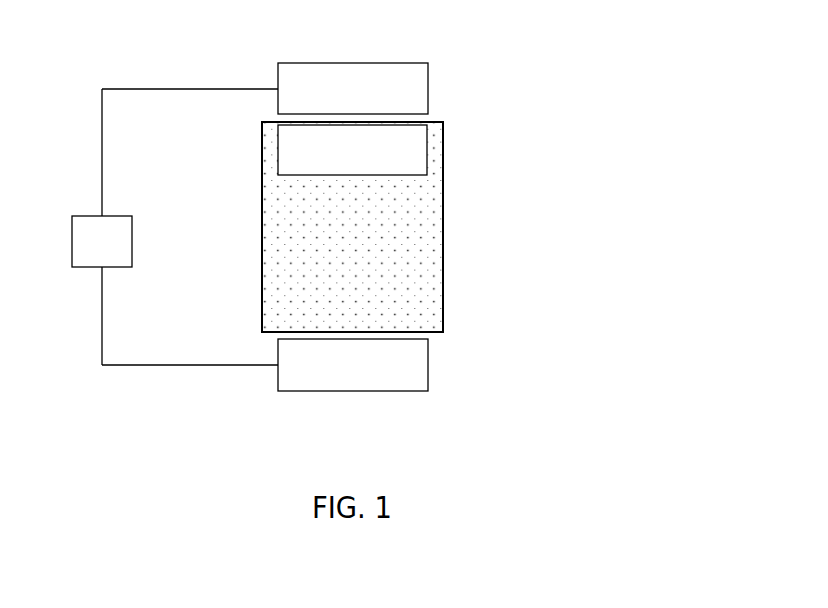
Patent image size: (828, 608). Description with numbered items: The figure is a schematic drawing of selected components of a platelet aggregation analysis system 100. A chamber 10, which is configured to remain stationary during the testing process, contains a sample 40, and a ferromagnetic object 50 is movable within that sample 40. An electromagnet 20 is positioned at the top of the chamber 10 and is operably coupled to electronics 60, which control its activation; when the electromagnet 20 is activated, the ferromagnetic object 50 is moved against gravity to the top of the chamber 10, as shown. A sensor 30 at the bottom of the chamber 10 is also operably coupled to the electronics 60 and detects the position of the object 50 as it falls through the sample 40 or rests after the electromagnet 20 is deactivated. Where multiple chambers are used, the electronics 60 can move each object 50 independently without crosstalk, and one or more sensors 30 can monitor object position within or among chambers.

The platelet aggregation analysis system 100 is at (383, 203).
The chamber 10 is at (443, 285).
The electromagnet 20 is at (338, 102).
The sensor 30 is at (338, 378).
The sample 40 is at (405, 218).
The ferromagnetic object 50 is at (338, 162).
The electronics 60 is at (87, 254).